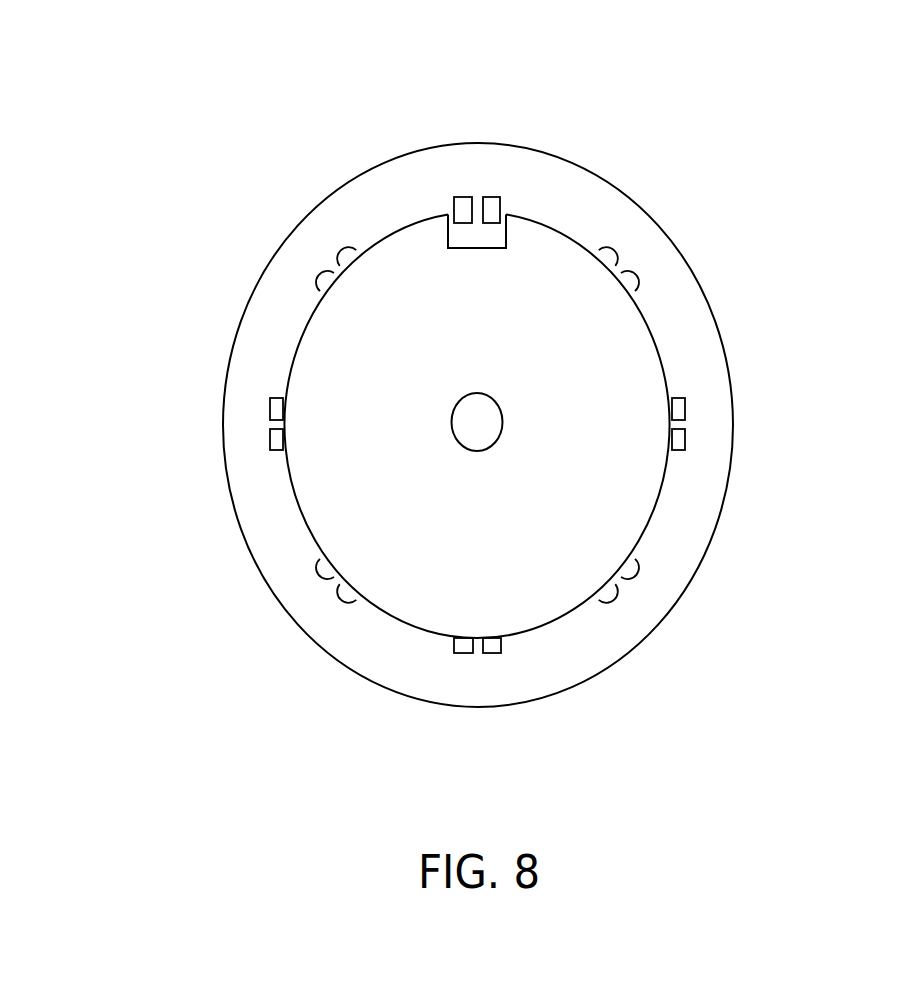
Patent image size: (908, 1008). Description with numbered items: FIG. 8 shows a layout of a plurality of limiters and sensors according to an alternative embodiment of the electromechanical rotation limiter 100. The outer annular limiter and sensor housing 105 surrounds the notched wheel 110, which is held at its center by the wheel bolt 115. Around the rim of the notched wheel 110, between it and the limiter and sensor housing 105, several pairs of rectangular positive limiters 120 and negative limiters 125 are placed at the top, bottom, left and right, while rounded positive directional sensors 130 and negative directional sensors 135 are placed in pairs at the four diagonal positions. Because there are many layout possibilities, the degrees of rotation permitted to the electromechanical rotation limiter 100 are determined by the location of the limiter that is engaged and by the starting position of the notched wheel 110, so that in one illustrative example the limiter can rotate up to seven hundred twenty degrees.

The electromechanical rotation limiter 100 is at (818, 131).
The limiter and sensor housing 105 is at (708, 383).
The notched wheel 110 is at (632, 485).
The wheel bolt 115 is at (480, 423).
The positive limiter 120 is at (465, 197).
The negative limiter 125 is at (497, 197).
The positive directional sensor 130 is at (320, 277).
The negative directional sensor 135 is at (343, 252).